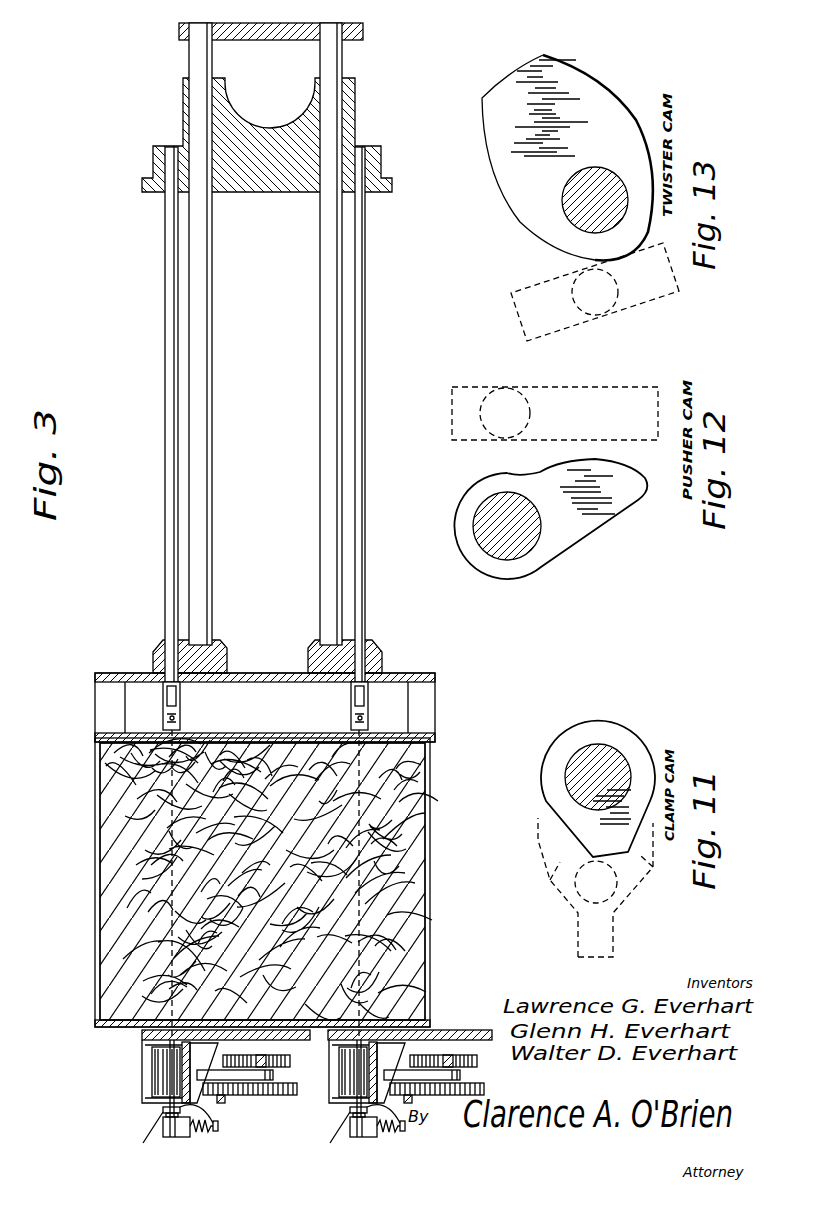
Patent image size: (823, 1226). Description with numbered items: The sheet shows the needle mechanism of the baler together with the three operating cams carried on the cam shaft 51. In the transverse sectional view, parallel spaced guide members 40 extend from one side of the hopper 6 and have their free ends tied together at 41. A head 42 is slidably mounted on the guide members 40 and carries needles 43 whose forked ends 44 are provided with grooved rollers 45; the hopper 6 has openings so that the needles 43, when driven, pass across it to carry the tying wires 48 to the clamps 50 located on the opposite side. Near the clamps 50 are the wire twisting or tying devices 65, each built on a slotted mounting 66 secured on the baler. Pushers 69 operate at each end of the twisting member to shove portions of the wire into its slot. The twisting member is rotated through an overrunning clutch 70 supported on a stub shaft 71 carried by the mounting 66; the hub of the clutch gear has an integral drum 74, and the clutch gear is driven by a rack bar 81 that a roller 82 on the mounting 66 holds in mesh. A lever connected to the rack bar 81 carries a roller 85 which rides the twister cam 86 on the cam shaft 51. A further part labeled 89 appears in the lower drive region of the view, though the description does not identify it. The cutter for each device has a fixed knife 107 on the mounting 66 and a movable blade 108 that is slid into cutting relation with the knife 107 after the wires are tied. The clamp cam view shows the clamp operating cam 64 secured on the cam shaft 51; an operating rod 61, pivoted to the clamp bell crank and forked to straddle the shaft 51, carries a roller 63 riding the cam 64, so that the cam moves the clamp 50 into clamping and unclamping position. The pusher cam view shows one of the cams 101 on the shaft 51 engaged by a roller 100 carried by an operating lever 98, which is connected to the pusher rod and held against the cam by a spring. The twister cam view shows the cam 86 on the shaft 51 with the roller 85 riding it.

In FIG. 3, the hopper 6 is at (95, 673).
In FIG. 3, the guide members 40 is at (212, 365).
In FIG. 3, the tied free ends of guide members 41 is at (257, 40).
In FIG. 3, the head 42 is at (257, 192).
In FIG. 3, the needles 43 is at (167, 510).
In FIG. 3, the forked ends 44 is at (162, 692).
In FIG. 3, the grooved rollers 45 is at (160, 715).
In FIG. 3, the tying wires 48 is at (180, 730).
In FIG. 3, the clamps 50 is at (175, 1137).
In FIG. 13, the cam shaft 51 is at (567, 212).
In FIG. 12, the cam shaft 51 is at (510, 555).
In FIG. 11, the cam shaft 51 is at (573, 780).
In FIG. 11, the operating rod 61 is at (585, 916).
In FIG. 11, the roller 63 is at (575, 883).
In FIG. 11, the clamp operating cam 64 is at (563, 740).
In FIG. 3, the wire twisting or tying devices 65 is at (163, 1070).
In FIG. 3, the slotted mounting 66 is at (475, 1030).
In FIG. 3, the pushers 69 is at (175, 1044).
In FIG. 3, the clutch 70 is at (241, 1103).
In FIG. 3, the stub shaft 71 is at (255, 1068).
In FIG. 3, the drum 74 is at (243, 1080).
In FIG. 3, the rack bar 81 is at (270, 1068).
In FIG. 3, the roller 82 is at (252, 1073).
In FIG. 13, the roller 85 is at (560, 277).
In FIG. 13, the cam 86 is at (493, 97).
In FIG. 3, the arm 89 is at (162, 1110).
In FIG. 12, the operating levers 98 is at (620, 387).
In FIG. 12, the rollers 100 is at (490, 390).
In FIG. 12, the cams 101 is at (590, 515).
In FIG. 3, the fixed knife 107 is at (147, 1103).
In FIG. 3, the movable blade 108 is at (206, 1133).